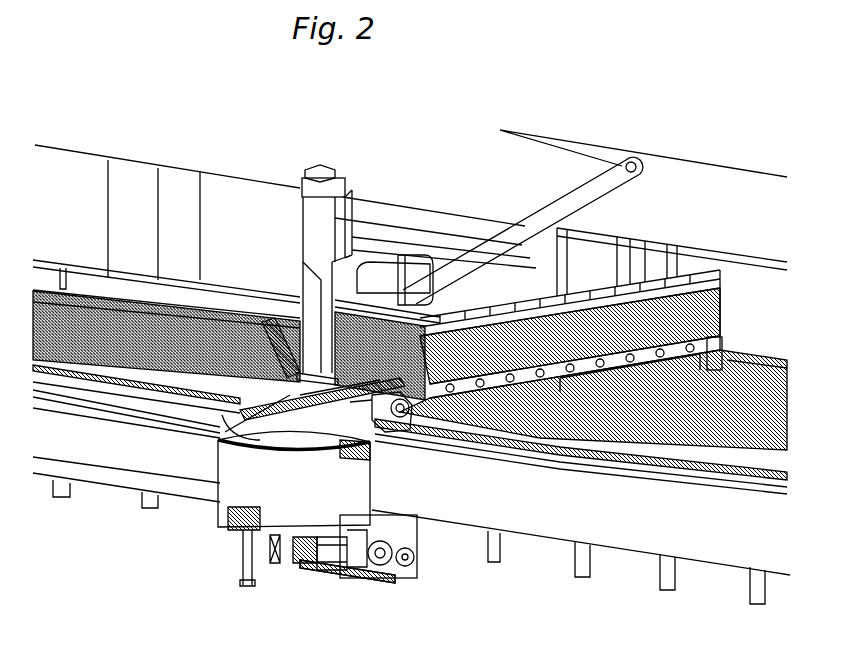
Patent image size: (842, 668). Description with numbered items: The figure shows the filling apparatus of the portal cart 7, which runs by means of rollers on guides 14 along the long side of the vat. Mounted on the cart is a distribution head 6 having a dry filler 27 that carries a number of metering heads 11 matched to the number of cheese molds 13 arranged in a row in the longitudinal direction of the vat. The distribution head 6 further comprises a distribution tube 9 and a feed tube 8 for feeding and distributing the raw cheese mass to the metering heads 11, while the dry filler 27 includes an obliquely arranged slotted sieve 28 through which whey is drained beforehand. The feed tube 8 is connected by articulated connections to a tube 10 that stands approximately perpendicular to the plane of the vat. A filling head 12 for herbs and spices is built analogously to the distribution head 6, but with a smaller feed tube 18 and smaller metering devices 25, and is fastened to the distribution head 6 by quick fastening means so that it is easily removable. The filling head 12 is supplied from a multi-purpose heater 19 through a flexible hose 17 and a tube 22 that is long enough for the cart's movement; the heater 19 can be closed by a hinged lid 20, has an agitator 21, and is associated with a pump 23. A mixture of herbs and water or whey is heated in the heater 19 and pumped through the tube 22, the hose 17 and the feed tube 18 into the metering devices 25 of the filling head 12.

The distribution head 6 is at (750, 309).
The portal cart 7 is at (342, 286).
The feed tube 8 is at (480, 264).
The distribution tube 9 is at (521, 292).
The tube 10 is at (565, 197).
The metering heads 11 is at (686, 311).
The filling head 12 is at (708, 340).
The cheese molds 13 is at (221, 308).
The guides 14 is at (625, 440).
The flexible hose 17 is at (388, 434).
The feed tube 18 is at (624, 366).
The multi-purpose heater 19 is at (226, 540).
The hinged lid 20 is at (298, 402).
The agitator 21 is at (306, 446).
The tube 22 is at (420, 537).
The pump 23 is at (350, 582).
The metering devices 25 is at (540, 405).
The dry filler 27 is at (428, 436).
The slotted sieve 28 is at (516, 386).